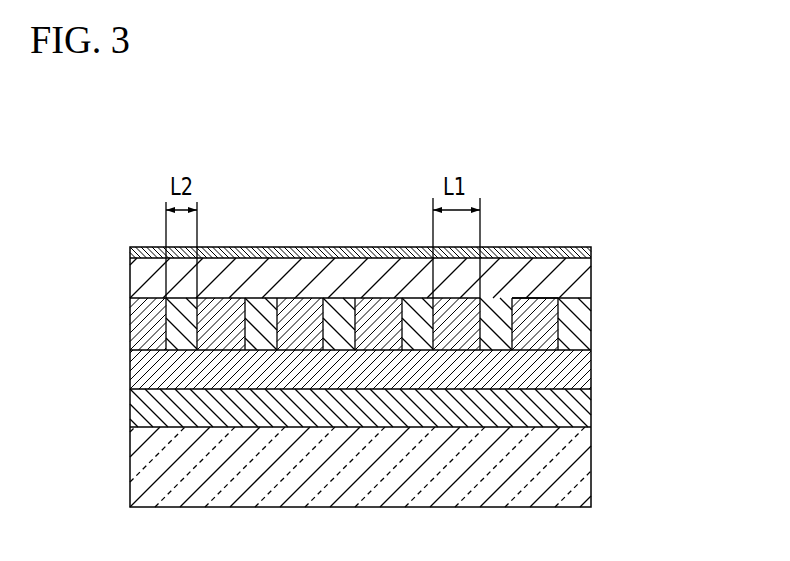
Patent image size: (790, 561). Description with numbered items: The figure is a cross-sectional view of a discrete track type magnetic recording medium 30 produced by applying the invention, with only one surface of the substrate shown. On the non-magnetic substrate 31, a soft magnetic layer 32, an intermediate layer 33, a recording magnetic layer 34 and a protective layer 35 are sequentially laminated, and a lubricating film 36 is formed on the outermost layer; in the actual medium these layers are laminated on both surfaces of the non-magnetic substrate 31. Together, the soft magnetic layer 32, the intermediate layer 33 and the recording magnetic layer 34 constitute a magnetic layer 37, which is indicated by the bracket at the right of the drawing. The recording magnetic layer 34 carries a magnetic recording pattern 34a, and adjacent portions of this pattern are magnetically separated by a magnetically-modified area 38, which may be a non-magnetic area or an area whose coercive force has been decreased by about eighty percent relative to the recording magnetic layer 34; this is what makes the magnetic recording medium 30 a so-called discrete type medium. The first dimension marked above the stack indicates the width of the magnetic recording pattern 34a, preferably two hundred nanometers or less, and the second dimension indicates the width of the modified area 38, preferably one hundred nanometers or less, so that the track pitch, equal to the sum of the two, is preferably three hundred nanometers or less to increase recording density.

The magnetic recording medium 30 is at (280, 157).
The non-magnetic substrate 31 is at (582, 457).
The soft magnetic layer 32 is at (404, 408).
The intermediate layer 33 is at (586, 372).
The recording magnetic layer 34 is at (582, 337).
The magnetic recording pattern 34a is at (545, 290).
The protective layer 35 is at (582, 280).
The lubricating film 36 is at (591, 249).
The magnetic layer 37 is at (433, 296).
The magnetically-modified area 38 is at (491, 310).